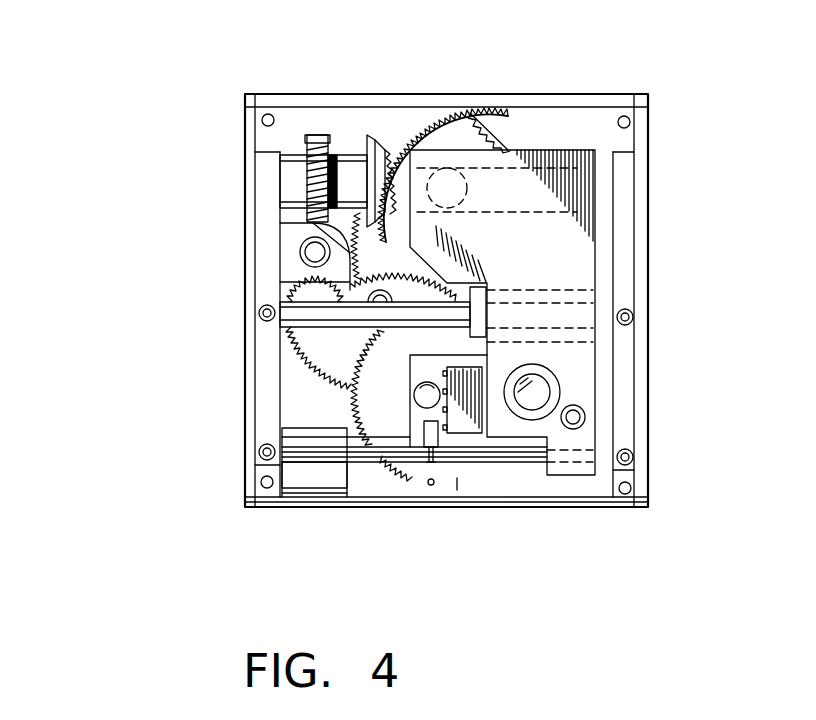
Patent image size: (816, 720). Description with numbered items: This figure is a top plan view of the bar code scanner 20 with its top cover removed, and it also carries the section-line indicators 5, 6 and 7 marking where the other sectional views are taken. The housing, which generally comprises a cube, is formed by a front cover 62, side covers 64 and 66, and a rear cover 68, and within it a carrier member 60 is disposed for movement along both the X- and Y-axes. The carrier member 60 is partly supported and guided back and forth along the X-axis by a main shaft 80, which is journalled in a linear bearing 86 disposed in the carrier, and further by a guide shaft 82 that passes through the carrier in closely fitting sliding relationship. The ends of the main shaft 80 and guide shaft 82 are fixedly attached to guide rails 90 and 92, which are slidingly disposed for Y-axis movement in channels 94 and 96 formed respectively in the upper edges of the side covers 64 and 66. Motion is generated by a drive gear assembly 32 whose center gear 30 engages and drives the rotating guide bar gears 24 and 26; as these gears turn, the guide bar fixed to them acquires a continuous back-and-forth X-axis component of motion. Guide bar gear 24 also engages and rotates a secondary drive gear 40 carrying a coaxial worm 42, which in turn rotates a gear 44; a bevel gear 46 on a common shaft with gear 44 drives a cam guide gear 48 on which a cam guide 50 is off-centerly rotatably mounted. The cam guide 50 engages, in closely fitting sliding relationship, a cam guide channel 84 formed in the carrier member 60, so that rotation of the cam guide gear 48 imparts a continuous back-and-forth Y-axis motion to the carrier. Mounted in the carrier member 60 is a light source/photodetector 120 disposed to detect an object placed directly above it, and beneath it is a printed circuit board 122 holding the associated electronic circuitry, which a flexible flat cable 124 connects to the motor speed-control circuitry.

The bar code scanner 20 is at (134, 437).
The guide bar gear 24 is at (378, 240).
The guide bar gear 26 is at (380, 388).
The center gear 30 is at (335, 264).
The drive gear assembly 32 is at (342, 355).
The secondary drive gear 40 is at (337, 314).
The worm 42 is at (318, 288).
The gear 44 is at (315, 138).
The bevel gear 46 is at (368, 150).
The cam guide gear 48 is at (453, 133).
The cam guide 50 is at (510, 112).
The carrier member 60 is at (578, 380).
The front cover 62 is at (287, 503).
The side cover 64 is at (255, 230).
The side cover 66 is at (628, 303).
The rear cover 68 is at (430, 102).
The main shaft 80 is at (342, 352).
The guide shaft 82 is at (353, 453).
The cam guide channel 84 is at (600, 190).
The linear bearing 86 is at (600, 260).
The guide rail 90 is at (282, 392).
The guide rail 92 is at (618, 366).
The channel 94 is at (254, 140).
The channel 96 is at (641, 140).
The light source/photodetector 120 is at (580, 424).
The printed circuit board 122 is at (460, 480).
The flexible flat cable 124 is at (297, 472).
The section line 5- 5 is at (213, 330).
The section line 6- 6 is at (560, 73).
The section line 7- 7 is at (605, 73).